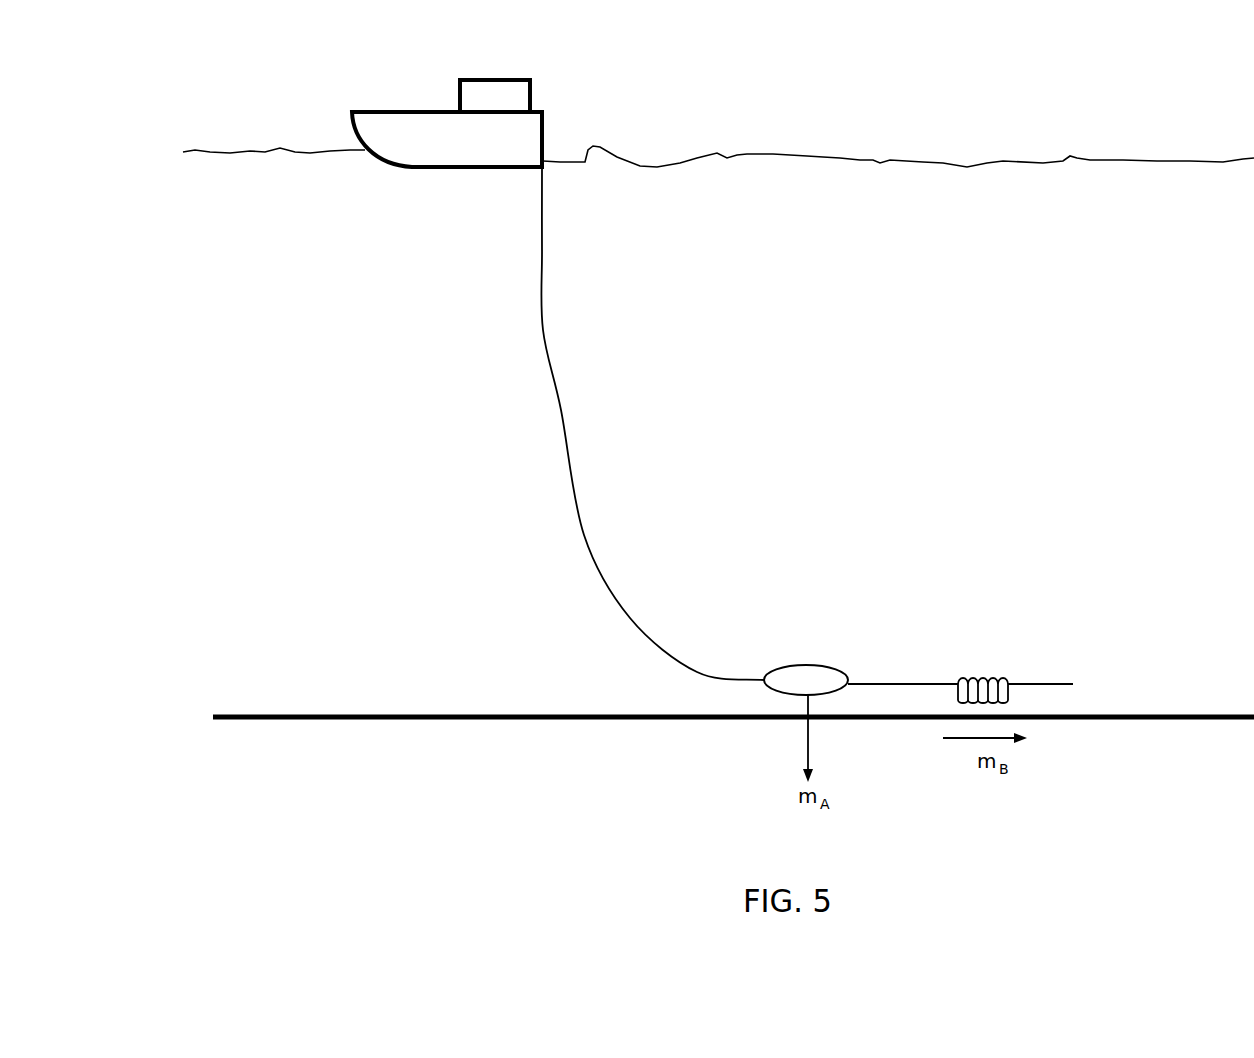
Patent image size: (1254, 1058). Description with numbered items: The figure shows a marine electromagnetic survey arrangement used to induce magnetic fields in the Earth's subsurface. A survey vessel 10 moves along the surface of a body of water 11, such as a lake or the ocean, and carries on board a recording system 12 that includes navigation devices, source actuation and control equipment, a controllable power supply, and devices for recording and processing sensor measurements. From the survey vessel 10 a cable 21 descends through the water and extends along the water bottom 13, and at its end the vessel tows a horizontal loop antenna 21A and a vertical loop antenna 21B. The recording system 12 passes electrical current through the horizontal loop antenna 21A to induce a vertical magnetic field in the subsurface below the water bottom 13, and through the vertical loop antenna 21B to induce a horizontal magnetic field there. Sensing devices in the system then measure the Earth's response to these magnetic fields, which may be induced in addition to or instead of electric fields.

The survey vessel 10 is at (397, 123).
The body of water 11 is at (843, 157).
The recording system 12 is at (508, 91).
The water bottom 13 is at (1065, 714).
The cable 21 is at (561, 411).
The horizontal loop antenna 21A is at (800, 665).
The vertical loop antenna 21B is at (976, 679).